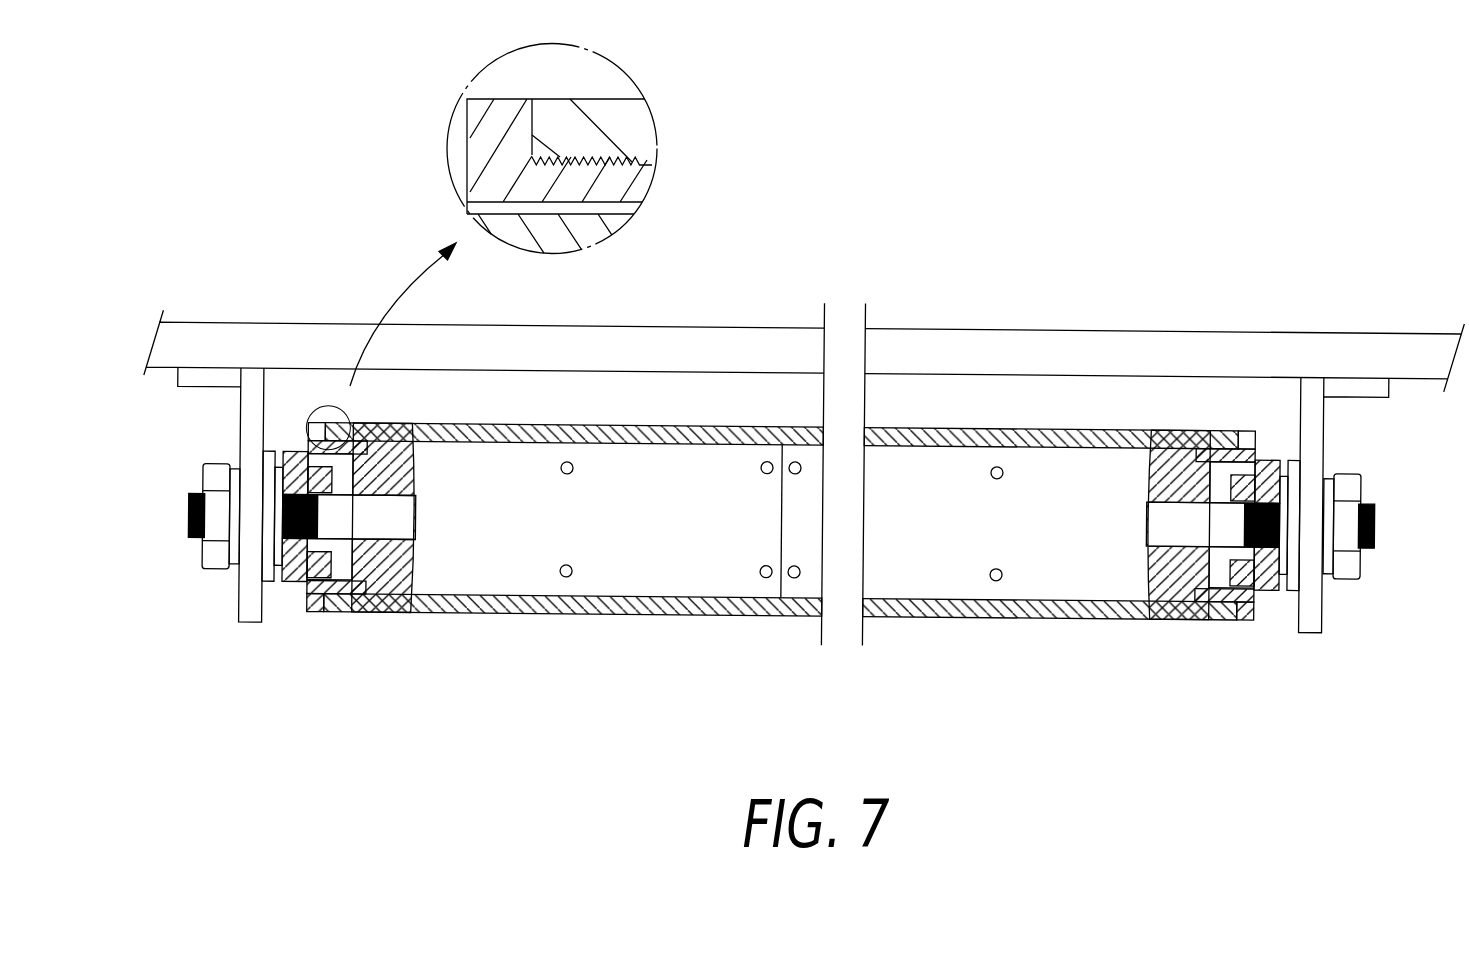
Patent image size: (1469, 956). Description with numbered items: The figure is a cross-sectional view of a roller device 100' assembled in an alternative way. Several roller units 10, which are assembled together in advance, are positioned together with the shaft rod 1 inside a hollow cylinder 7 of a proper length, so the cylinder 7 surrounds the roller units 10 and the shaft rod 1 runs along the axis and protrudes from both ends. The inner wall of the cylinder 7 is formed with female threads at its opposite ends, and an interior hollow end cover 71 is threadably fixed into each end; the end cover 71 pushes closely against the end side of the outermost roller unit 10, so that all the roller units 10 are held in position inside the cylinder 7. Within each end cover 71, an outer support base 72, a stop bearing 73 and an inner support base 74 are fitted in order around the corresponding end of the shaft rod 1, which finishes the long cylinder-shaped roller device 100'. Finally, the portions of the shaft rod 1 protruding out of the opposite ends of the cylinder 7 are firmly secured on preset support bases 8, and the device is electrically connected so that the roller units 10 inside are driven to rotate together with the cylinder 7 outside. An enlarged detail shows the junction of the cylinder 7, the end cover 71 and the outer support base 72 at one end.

The shaft rod 1 is at (1168, 525).
The hollow cylinder 7 is at (958, 608).
The support base 8 is at (1315, 426).
The roller unit 10 is at (1070, 572).
The end cover 71 is at (1257, 440).
The outer support base 72 is at (578, 235).
The stop bearing 73 is at (1243, 575).
The inner support base 74 is at (1270, 460).
The roller device 100' is at (804, 540).